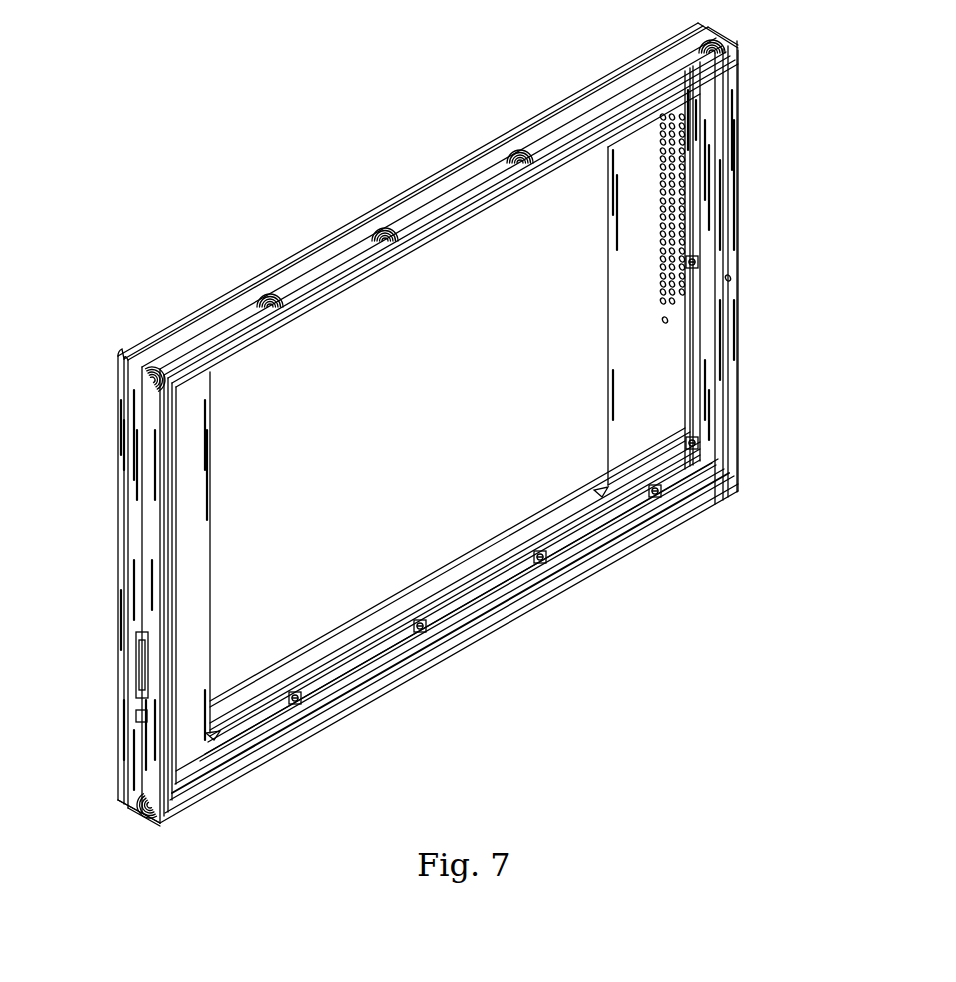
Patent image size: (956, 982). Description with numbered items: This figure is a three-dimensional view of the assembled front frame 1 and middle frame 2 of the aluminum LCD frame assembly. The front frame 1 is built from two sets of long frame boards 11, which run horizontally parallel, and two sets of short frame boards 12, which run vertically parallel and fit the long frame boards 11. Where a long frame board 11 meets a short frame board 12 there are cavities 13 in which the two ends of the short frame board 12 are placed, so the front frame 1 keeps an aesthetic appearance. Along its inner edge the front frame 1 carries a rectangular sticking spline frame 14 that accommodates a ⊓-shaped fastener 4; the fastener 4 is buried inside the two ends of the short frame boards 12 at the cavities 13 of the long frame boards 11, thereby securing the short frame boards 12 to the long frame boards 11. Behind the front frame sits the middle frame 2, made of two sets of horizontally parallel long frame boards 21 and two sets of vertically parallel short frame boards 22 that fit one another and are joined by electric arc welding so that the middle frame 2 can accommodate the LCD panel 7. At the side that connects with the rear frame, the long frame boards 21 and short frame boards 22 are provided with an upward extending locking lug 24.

The front frame 1 is at (243, 283).
The middle frame 2 is at (138, 822).
The fastener 4 is at (672, 292).
The LCD panel 7 is at (135, 688).
The long frame boards 11 is at (350, 238).
The short frame boards 12 is at (215, 498).
The cavities 13 is at (212, 737).
The sticking spline frame 14 is at (478, 578).
The long frame boards 21 is at (430, 228).
The short frame boards 22 is at (130, 500).
The locking lug 24 is at (368, 274).